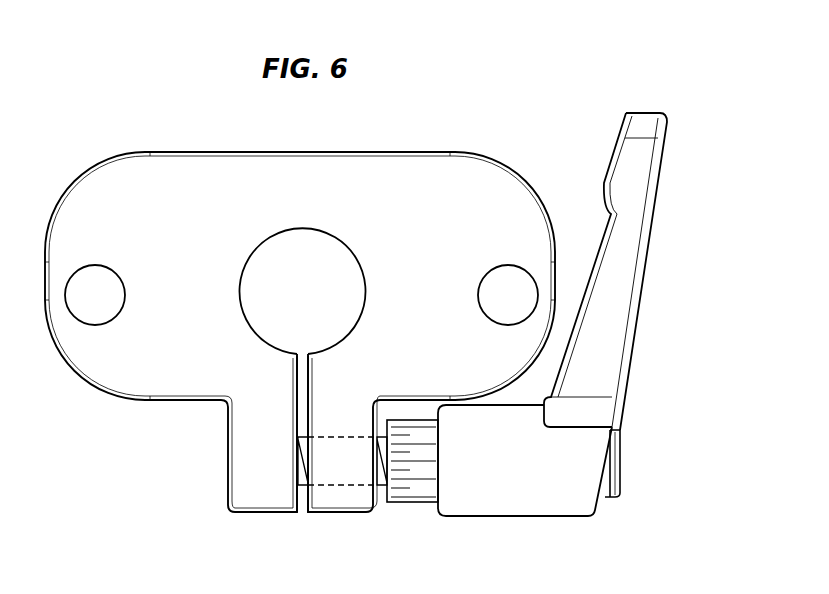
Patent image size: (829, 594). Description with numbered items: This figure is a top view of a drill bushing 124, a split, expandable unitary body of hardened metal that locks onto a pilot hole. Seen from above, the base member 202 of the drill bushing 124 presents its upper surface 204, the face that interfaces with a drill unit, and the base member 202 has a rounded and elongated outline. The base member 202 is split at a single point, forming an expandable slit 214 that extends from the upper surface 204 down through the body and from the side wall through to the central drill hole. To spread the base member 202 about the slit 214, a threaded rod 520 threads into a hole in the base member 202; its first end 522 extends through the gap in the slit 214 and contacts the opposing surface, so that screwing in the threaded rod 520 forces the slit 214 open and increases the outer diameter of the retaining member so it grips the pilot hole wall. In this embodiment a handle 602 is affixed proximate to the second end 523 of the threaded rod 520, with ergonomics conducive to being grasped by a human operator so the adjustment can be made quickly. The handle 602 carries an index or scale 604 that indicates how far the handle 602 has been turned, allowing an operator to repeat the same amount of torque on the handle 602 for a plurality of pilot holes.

The drill bushing 124 is at (444, 128).
The base member 202 is at (537, 193).
The upper surface 204 is at (322, 191).
The slit 214 is at (302, 511).
The threaded rod 520 is at (386, 490).
The first end 522 is at (297, 472).
The second end 523 is at (620, 467).
The handle 602 is at (606, 315).
The scale 604 is at (422, 507).